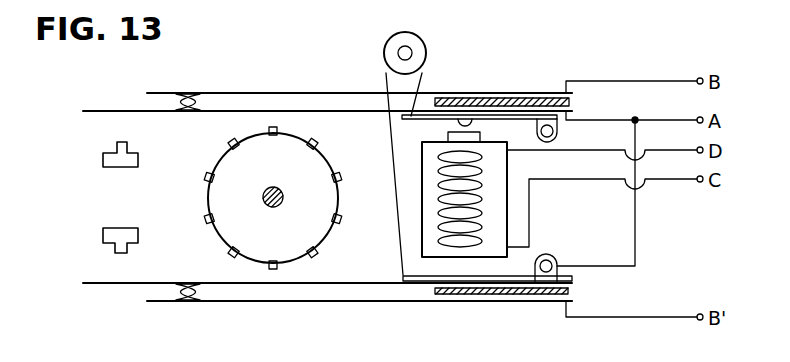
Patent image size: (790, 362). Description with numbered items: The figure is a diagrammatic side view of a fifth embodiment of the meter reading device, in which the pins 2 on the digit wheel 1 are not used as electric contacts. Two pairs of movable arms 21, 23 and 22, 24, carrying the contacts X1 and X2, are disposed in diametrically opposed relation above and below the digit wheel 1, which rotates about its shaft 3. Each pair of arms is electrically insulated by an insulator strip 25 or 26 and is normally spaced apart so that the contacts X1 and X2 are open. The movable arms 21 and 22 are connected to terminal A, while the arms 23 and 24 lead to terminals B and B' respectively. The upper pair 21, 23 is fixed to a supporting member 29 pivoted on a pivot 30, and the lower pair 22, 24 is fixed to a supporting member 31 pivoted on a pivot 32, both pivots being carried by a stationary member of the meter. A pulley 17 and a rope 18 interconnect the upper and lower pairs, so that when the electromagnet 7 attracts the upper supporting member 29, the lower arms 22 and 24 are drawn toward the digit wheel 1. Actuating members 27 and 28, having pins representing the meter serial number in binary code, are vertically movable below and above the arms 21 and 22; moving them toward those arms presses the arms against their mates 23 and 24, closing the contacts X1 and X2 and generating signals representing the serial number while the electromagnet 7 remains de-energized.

The digit wheel 1 is at (254, 196).
The pins 2 is at (230, 142).
The wheel shaft 3 is at (283, 198).
The electromagnet 7 is at (507, 163).
The pulley 17 is at (385, 44).
The tape 18 is at (390, 131).
The movable arm 21 is at (113, 111).
The movable arm 22 is at (113, 285).
The movable arm 23 is at (272, 93).
The movable arm 24 is at (289, 301).
The insulator strip 25 is at (505, 97).
The insulator strip 26 is at (512, 296).
The actuating member 27 is at (103, 160).
The actuating member 28 is at (103, 234).
The supporting member 29 is at (412, 119).
The pivot 30 is at (553, 132).
The supporting member 31 is at (403, 277).
The pivot 32 is at (546, 259).
The contact X1 is at (204, 93).
The contact X2 is at (198, 298).